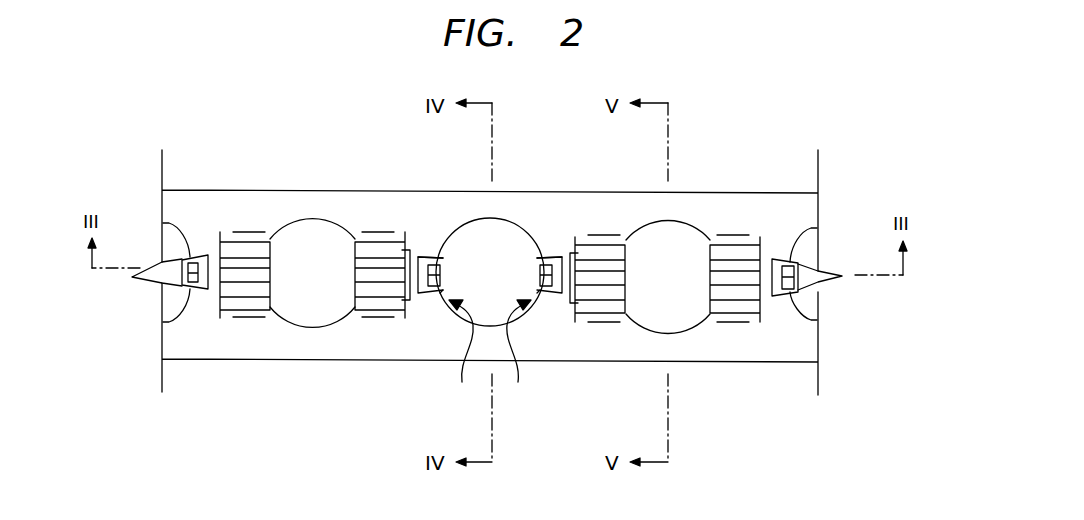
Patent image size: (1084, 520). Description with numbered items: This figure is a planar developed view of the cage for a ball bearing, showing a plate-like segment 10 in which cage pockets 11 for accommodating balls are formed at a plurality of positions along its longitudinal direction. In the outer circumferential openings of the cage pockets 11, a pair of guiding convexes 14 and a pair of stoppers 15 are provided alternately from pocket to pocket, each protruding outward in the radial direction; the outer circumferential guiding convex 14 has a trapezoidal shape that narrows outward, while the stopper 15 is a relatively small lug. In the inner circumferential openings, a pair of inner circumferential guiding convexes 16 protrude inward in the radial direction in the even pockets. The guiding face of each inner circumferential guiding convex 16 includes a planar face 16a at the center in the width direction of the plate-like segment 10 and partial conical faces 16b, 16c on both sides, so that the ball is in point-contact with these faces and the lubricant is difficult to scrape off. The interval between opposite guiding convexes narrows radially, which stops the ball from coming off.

The plate-like segment 10 is at (820, 210).
The cage pocket 11 is at (673, 237).
The outer circumferential guiding convex 14 is at (372, 300).
The stopper 15 is at (550, 257).
The inner circumferential guiding convex 16 is at (490, 352).
The planar face 16a is at (585, 292).
The partial conical face 16b is at (545, 293).
The partial conical face 16c is at (537, 260).